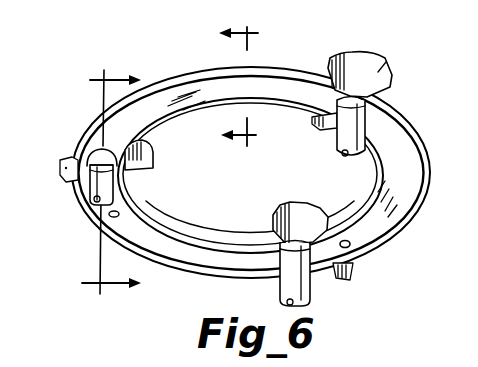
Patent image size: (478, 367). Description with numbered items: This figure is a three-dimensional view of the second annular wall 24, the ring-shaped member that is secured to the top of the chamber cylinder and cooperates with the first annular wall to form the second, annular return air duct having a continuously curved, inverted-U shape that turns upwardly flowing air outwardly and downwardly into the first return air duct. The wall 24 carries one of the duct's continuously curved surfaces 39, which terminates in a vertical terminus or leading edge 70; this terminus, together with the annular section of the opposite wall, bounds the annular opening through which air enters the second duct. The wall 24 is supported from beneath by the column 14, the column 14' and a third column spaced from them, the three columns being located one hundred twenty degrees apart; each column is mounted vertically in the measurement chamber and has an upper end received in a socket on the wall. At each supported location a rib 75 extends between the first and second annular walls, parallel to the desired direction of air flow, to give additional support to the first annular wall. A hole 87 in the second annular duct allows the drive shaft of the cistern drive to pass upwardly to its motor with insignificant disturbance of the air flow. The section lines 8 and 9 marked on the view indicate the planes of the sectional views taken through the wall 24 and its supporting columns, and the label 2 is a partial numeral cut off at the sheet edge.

The partial numeral (cut off) 2 is at (468, 93).
The section line 8- 8 is at (121, 171).
The section line 9- 9 is at (225, 84).
The column 14 is at (341, 254).
The column 14' is at (147, 177).
The second annular wall 24 is at (99, 122).
The continuously curved surface 39 is at (335, 26).
The vertical terminus 70 is at (196, 236).
The rib 75 is at (370, 89).
The hole 87 is at (356, 246).